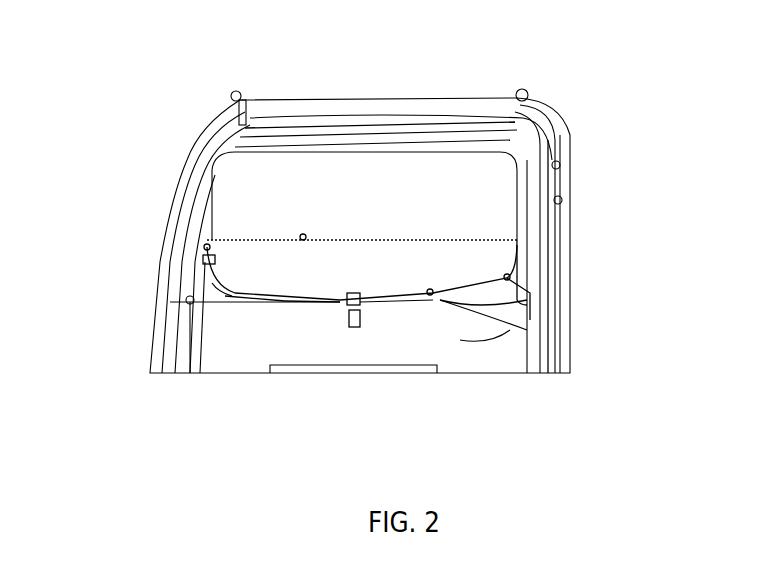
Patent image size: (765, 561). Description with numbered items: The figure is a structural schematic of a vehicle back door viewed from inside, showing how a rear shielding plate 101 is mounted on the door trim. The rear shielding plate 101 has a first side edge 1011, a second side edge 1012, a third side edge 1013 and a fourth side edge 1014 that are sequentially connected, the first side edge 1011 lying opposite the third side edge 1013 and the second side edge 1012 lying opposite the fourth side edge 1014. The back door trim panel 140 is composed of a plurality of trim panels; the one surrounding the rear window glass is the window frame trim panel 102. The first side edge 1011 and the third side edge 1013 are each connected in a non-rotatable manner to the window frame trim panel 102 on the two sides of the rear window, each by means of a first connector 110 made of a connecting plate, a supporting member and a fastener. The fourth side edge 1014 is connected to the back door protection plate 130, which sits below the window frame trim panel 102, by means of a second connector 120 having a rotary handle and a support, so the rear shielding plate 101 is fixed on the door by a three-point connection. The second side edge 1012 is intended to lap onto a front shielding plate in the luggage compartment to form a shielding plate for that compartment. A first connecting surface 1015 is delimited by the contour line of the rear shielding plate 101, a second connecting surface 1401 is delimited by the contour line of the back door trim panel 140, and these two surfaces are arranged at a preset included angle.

The rear shielding plate 101 is at (252, 269).
The window frame trim panel 102 is at (530, 210).
The first connector 110 is at (520, 253).
The second connector 120 is at (352, 305).
The back door protection plate 130 is at (503, 330).
The back door trim panel 140 is at (222, 290).
The first side edge 1011 is at (507, 273).
The second side edge 1012 is at (482, 237).
The third side edge 1013 is at (207, 262).
The fourth side edge 1014 is at (300, 303).
The first connecting surface 1015 is at (507, 277).
The second connecting surface 1401 is at (280, 305).